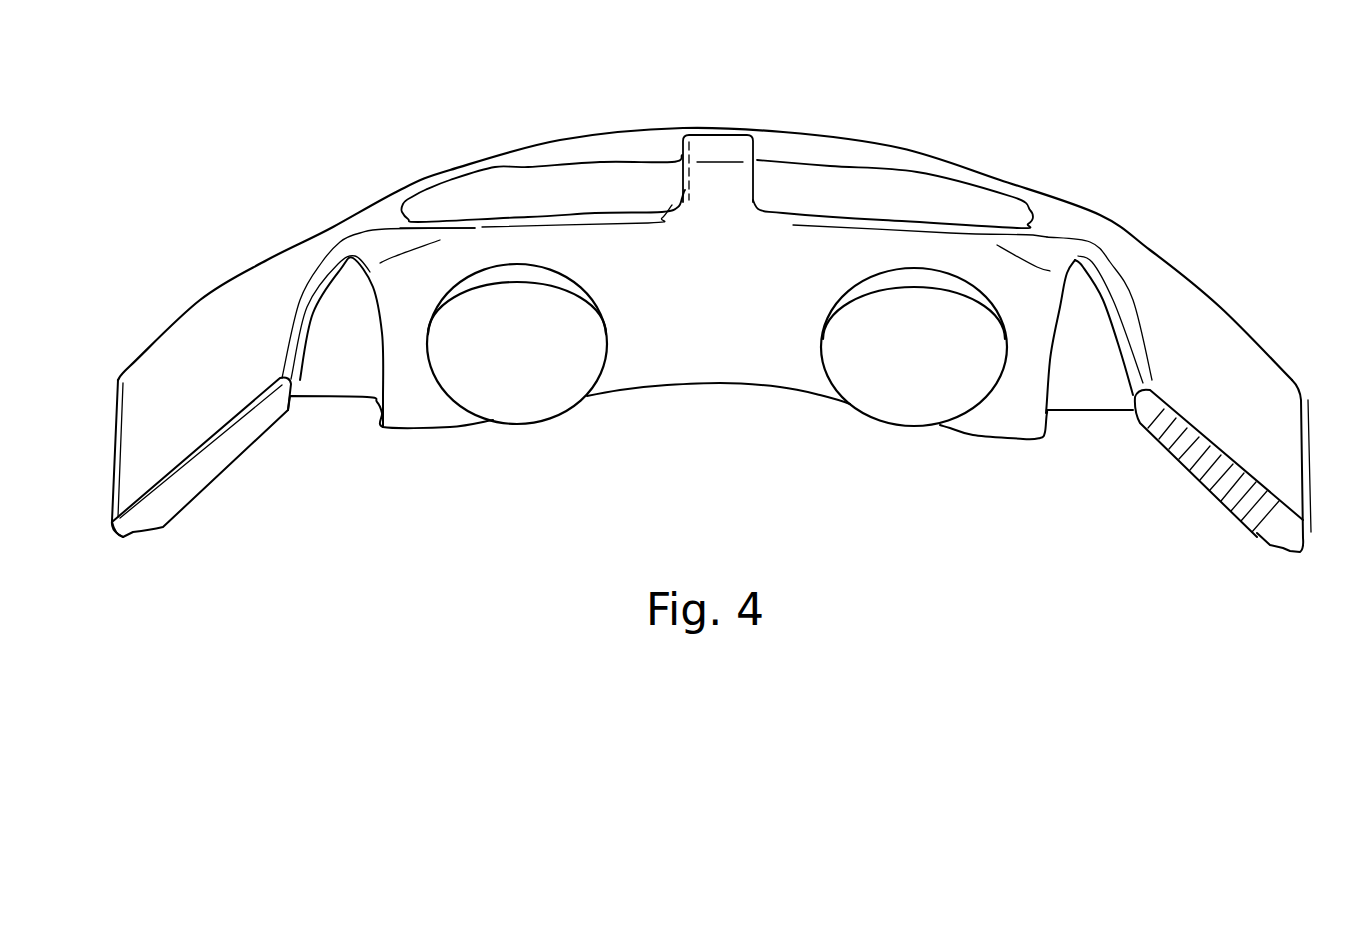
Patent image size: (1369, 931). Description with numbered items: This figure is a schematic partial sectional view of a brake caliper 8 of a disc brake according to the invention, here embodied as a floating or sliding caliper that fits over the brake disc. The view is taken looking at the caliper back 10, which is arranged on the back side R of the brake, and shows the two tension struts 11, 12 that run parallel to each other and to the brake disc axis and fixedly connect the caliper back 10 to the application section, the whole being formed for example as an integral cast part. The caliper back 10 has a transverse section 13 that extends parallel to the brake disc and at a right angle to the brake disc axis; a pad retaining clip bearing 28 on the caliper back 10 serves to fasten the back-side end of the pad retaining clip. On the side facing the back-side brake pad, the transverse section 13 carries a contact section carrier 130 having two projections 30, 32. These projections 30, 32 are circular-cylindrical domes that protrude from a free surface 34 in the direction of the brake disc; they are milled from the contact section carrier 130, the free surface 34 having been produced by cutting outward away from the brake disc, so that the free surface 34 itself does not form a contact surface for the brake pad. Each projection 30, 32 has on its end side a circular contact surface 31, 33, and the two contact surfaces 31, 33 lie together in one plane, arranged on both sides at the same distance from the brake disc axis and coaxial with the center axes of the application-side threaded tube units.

The brake caliper 8 is at (1148, 250).
The caliper back 10 is at (1100, 237).
The tension strut 11 is at (168, 493).
The tension strut 12 is at (1248, 488).
The transverse section 13 is at (800, 195).
The pad retaining clip bearing 28 is at (712, 150).
The contact section carrier 130 is at (597, 213).
The projection 30 is at (497, 425).
The contact surface 31 is at (558, 385).
The projection 32 is at (898, 432).
The contact surface 33 is at (892, 377).
The free surface 34 is at (733, 350).
The back side R is at (1223, 270).